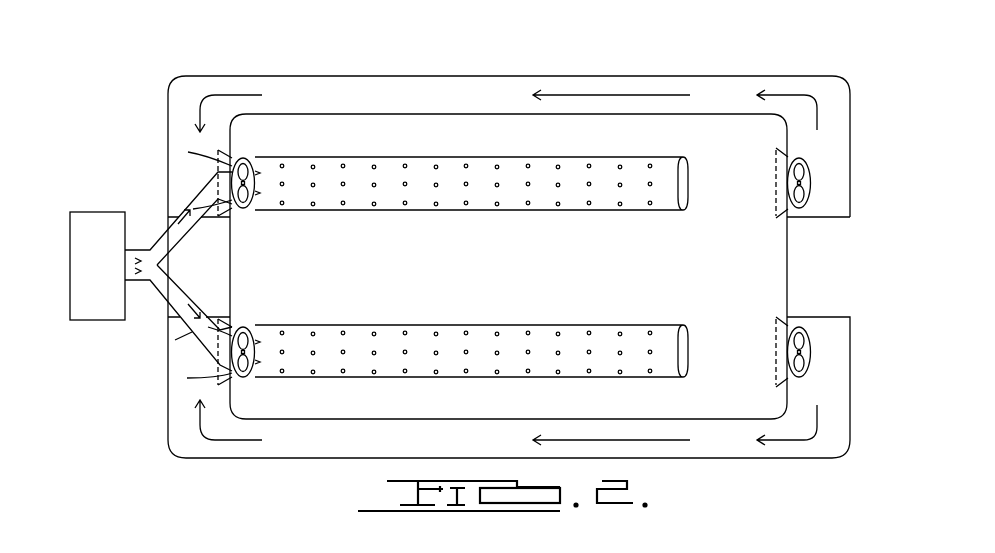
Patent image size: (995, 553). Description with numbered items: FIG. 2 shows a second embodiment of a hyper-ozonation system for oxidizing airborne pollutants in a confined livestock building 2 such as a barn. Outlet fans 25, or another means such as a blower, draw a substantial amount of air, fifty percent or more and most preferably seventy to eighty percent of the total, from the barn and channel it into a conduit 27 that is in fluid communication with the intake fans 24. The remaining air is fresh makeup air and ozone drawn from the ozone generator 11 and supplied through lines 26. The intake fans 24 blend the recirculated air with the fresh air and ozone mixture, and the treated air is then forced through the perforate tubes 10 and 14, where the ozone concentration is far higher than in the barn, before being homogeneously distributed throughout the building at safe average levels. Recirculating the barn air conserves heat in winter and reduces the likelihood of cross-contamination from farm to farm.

The livestock building 2 is at (158, 471).
The perforated tubes 10 is at (517, 198).
The ozone generator 11 is at (93, 302).
The second set of perforated tubes 14 is at (453, 333).
The intake fans 24 is at (240, 183).
The outlet fans 25 is at (790, 185).
The lines 26 is at (138, 283).
The conduit 27 is at (723, 93).